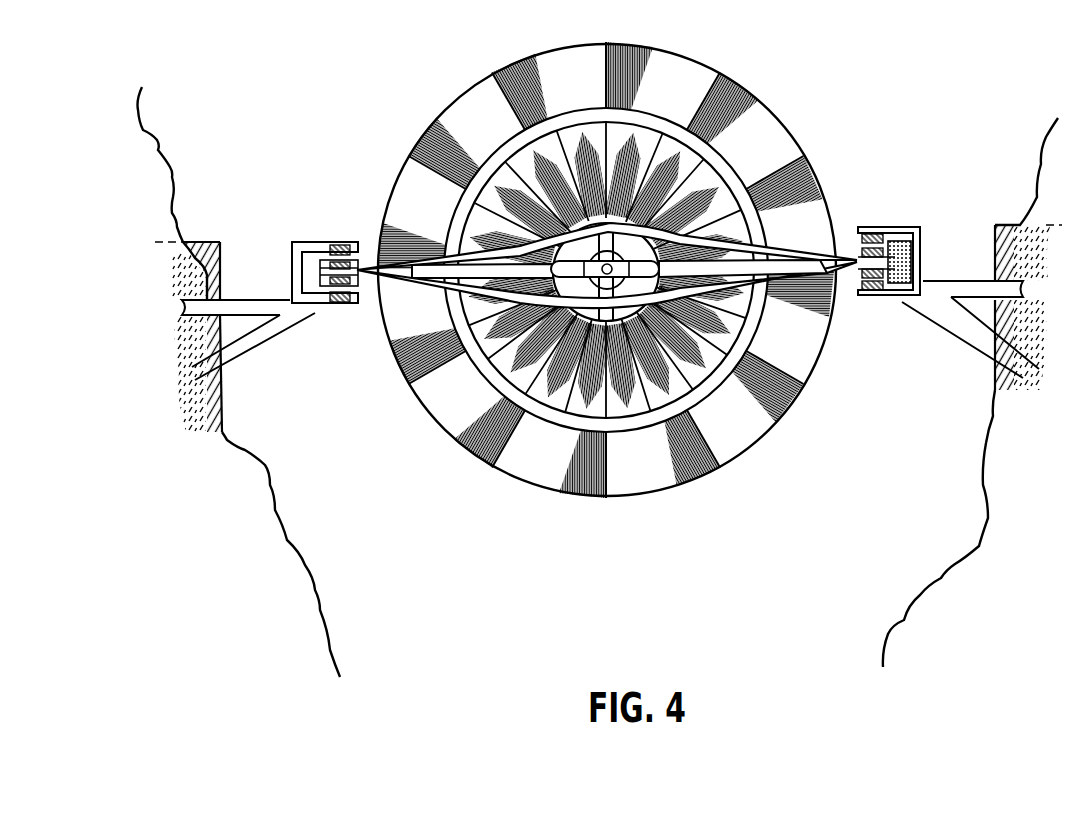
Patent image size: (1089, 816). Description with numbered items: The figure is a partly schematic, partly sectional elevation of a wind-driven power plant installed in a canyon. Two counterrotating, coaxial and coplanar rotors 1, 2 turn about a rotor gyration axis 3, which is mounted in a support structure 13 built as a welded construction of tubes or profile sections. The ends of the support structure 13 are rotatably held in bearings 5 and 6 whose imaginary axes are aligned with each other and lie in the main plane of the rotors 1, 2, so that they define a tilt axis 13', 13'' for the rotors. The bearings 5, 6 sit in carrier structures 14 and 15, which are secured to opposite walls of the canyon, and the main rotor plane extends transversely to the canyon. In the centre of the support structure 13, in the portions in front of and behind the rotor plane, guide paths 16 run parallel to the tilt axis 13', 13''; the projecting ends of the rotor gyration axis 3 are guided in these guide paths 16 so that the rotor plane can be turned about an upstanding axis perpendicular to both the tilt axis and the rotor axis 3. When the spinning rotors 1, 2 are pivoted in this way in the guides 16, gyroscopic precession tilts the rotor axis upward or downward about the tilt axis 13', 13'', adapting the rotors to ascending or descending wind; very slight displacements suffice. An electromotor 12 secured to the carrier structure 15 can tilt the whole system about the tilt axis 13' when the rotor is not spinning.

The rotor 1 is at (648, 66).
The rotor 2 is at (645, 143).
The rotor gyration axis 3 is at (613, 266).
The bearing 5 is at (341, 243).
The bearing 6 is at (877, 234).
The electromotor 12 is at (908, 241).
The support structure 13 is at (607, 374).
The tilt axis end 13' is at (339, 335).
The tilt axis end 13'' is at (885, 321).
The carrier structure 14 is at (248, 304).
The carrier structure 15 is at (972, 290).
The guide path 16 is at (577, 282).